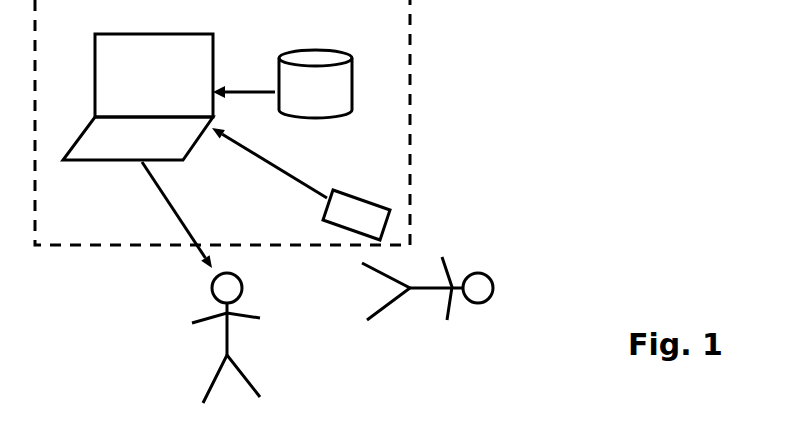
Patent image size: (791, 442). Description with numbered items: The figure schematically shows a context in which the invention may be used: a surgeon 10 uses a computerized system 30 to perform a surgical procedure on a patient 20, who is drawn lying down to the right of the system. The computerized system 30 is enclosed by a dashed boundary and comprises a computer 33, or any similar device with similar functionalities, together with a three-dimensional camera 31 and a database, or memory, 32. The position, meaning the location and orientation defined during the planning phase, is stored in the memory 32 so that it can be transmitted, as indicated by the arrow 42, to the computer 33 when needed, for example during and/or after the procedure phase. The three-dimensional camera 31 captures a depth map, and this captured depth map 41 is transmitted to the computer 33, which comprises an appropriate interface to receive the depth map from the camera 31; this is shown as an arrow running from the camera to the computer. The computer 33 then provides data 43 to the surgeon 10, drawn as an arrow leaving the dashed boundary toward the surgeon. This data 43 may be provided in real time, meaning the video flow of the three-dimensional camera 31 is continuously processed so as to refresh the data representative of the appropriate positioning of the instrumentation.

The surgeon 10 is at (212, 296).
The patient 20 is at (482, 272).
The computerized system 30 is at (410, 85).
The 3D-camera 31 is at (375, 202).
The database, or memory 32 is at (323, 58).
The computer 33 is at (112, 33).
The captured depth map 41 is at (255, 160).
The transmission of stored position 42 is at (238, 87).
The data provided to the surgeon 43 is at (150, 177).